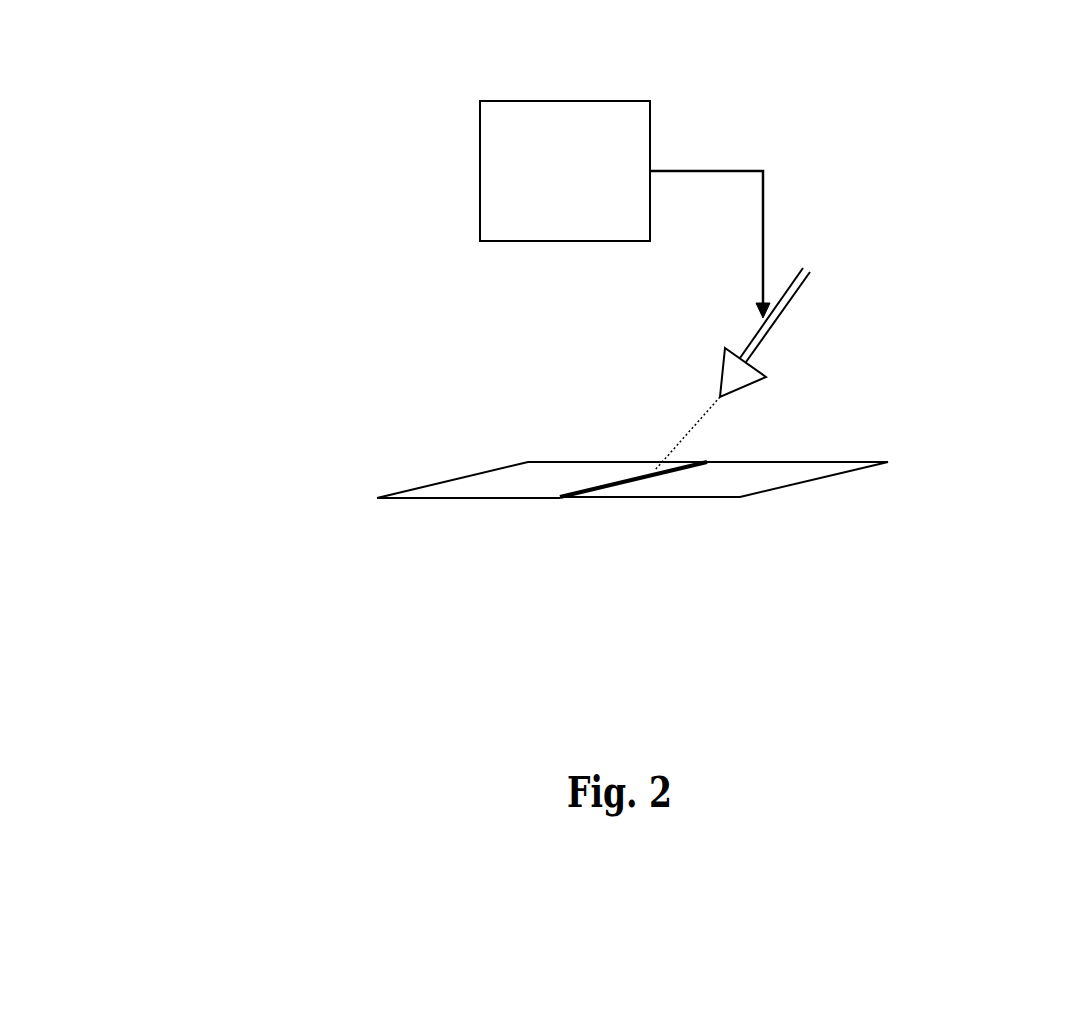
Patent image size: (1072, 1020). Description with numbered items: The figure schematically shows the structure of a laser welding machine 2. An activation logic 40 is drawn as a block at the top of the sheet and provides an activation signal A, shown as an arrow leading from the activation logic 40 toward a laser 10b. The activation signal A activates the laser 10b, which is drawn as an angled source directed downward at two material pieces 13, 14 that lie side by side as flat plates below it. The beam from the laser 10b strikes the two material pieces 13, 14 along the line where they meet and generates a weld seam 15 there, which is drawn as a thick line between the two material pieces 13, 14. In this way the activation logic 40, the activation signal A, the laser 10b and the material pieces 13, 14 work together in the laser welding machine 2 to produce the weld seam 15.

The laser welding machine 2 is at (183, 100).
The activation logic 40 is at (467, 109).
The activation signal A is at (780, 178).
The laser 10b is at (802, 308).
The material piece 13 is at (443, 468).
The material piece 14 is at (890, 462).
The weld seam 15 is at (596, 497).